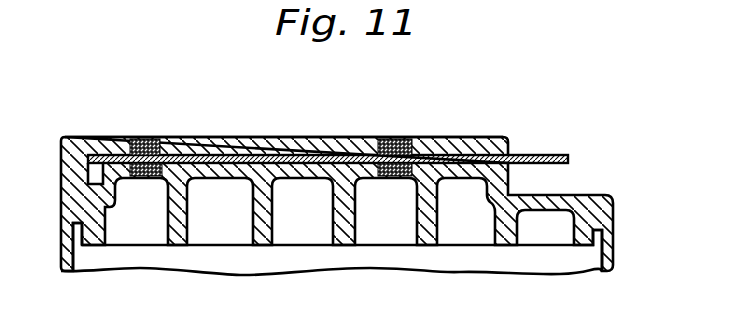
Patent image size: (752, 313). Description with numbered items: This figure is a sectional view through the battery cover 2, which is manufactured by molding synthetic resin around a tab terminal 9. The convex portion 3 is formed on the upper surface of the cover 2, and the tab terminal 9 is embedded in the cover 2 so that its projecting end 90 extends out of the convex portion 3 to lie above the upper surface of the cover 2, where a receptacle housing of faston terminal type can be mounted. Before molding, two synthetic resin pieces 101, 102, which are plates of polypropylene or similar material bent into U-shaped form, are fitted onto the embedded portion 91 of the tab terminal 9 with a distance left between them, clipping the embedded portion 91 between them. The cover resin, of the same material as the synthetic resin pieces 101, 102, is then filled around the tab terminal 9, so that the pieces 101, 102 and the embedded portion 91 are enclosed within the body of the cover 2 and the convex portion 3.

The cover 2 is at (617, 203).
The convex portion 3 is at (474, 136).
The tab terminal 9 is at (191, 136).
The projecting end 90 is at (545, 157).
The embedded portion 91 is at (247, 150).
The synthetic resin piece 101 is at (147, 138).
The synthetic resin piece 102 is at (393, 138).